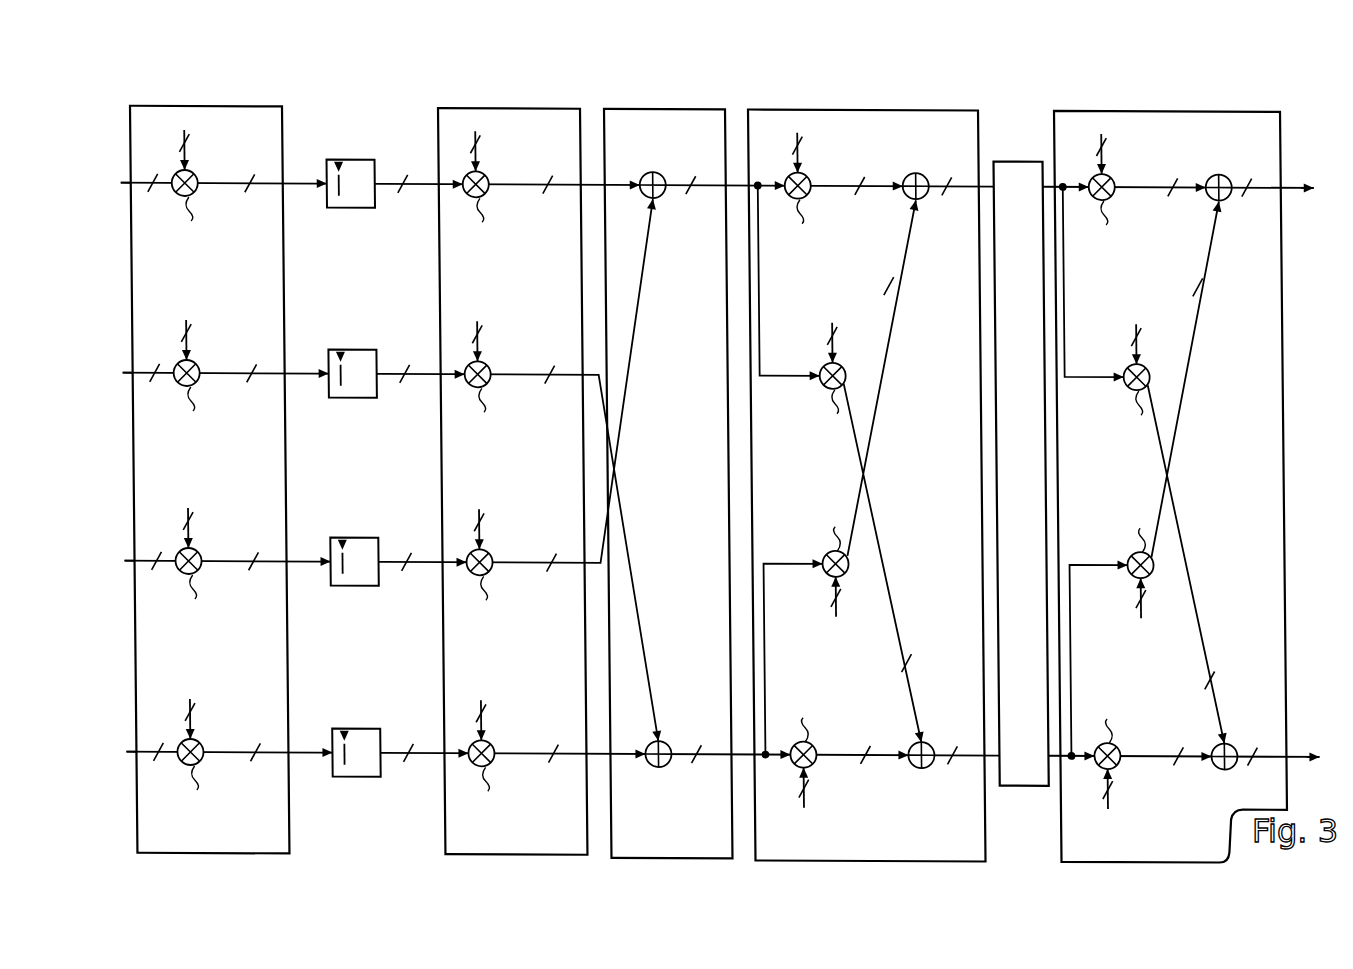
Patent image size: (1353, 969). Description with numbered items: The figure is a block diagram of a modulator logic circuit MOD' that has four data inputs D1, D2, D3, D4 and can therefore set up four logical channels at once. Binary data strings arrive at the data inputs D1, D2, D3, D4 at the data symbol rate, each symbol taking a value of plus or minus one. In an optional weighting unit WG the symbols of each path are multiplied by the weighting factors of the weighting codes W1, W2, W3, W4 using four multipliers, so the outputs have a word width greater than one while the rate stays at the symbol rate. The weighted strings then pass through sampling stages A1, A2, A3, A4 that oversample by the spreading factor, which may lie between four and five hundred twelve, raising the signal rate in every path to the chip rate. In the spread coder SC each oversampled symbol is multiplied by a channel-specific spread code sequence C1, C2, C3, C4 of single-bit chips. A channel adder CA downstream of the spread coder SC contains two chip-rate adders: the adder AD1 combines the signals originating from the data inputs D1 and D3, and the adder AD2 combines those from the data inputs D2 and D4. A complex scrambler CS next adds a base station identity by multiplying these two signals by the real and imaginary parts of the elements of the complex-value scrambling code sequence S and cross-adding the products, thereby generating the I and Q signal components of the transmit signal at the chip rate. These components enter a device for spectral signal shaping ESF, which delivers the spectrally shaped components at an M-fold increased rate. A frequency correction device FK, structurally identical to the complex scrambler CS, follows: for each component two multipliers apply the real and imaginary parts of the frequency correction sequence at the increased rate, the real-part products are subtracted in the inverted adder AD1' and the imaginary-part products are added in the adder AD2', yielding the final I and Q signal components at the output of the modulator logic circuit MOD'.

The modulator logic circuit MOD' is at (707, 433).
The weighting unit WG is at (228, 845).
The spread coder SC is at (533, 845).
The channel adder CA is at (678, 845).
The complex scrambler CS is at (895, 845).
The device for spectral signal shaping ESF is at (1021, 474).
The frequency correction device FK is at (1176, 850).
The weighting code W1 is at (205, 176).
The weighting code W2 is at (203, 348).
The weighting code W3 is at (204, 536).
The weighting code W4 is at (206, 727).
The sampling stage A1 is at (372, 198).
The sampling stage A2 is at (376, 395).
The sampling stage A3 is at (378, 583).
The sampling stage A4 is at (380, 741).
The spread code sequence C1 is at (513, 177).
The spread code sequence C2 is at (516, 348).
The spread code sequence C3 is at (517, 536).
The spread code sequence C4 is at (519, 727).
The adder AD1 is at (669, 178).
The adder AD2 is at (679, 747).
The inverted adder AD1' is at (1206, 180).
The adder AD2' is at (1212, 777).
The complex-value scrambling code sequence S is at (827, 483).
The data input D1 is at (112, 181).
The data input D2 is at (113, 371).
The data input D3 is at (115, 559).
The data input D4 is at (117, 750).
The I signal component I is at (984, 182).
The Q signal component Q is at (992, 760).